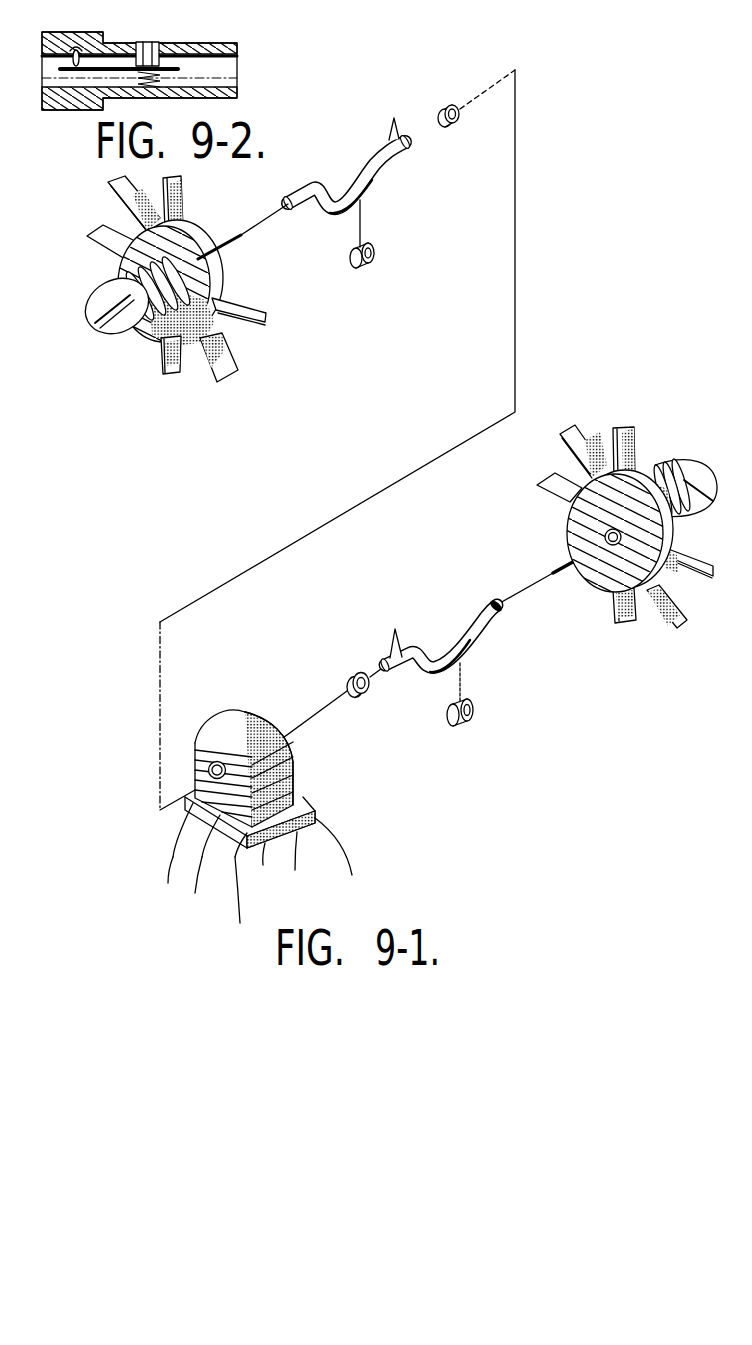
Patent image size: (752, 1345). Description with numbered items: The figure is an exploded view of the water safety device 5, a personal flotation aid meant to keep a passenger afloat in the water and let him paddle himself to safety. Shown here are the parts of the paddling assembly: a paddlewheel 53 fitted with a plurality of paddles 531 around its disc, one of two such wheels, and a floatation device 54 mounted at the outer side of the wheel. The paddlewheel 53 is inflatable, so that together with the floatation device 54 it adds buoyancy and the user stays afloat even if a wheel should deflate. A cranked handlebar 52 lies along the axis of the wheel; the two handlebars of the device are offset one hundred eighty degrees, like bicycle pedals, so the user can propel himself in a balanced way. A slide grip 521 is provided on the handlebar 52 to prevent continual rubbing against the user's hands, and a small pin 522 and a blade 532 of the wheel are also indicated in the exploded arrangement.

In FIG. 9-1, the water safety device 5 is at (310, 772).
In FIG. 9-2, the handlebar 52 is at (401, 149).
In FIG. 9-1, the handlebar 52 is at (499, 609).
In FIG. 9-2, the slide grip 521 is at (378, 263).
In FIG. 9-1, the slide grip 521 is at (466, 728).
In FIG. 9-2, the pin 522 is at (152, 41).
In FIG. 9-1, the pin 522 is at (395, 637).
In FIG. 9-2, the paddlewheel 53 is at (188, 279).
In FIG. 9-1, the paddlewheel 53 is at (610, 551).
In FIG. 9-2, the paddle 531 is at (192, 226).
In FIG. 9-2, the blade 532 is at (260, 319).
In FIG. 9-1, the blade 532 is at (625, 617).
In FIG. 9-2, the floatation device 54 is at (106, 291).
In FIG. 9-1, the floatation device 54 is at (686, 465).